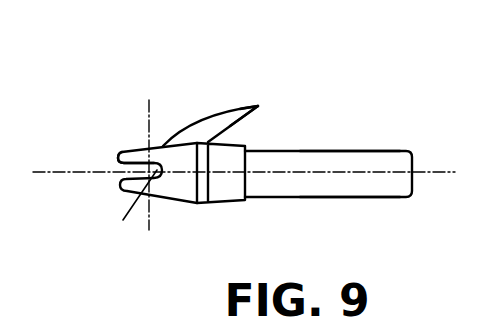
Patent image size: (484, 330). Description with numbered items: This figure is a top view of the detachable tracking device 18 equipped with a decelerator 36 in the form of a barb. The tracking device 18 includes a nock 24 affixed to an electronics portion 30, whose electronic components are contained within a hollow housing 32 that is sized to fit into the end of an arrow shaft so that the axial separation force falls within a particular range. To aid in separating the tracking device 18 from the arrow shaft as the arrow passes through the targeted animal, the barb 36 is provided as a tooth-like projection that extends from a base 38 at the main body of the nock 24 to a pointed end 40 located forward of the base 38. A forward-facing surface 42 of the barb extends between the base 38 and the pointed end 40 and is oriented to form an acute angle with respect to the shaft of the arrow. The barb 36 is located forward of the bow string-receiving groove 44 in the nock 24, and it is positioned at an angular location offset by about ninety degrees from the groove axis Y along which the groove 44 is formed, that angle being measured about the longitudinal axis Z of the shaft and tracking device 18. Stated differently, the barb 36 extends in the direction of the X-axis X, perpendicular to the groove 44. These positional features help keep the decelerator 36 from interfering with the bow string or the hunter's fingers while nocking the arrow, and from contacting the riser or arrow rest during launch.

The tracking device 18 is at (245, 145).
The nock 24 is at (222, 199).
The electronics portion 30 is at (347, 150).
The housing 32 is at (328, 186).
The decelerator 36 is at (204, 123).
The base 38 is at (197, 146).
The pointed end 40 is at (259, 105).
The forward-facing surface 42 is at (239, 122).
The bow string-receiving groove 44 is at (130, 171).
The X-axis X is at (150, 107).
The groove axis Y is at (134, 208).
The longitudinal axis Z is at (436, 171).